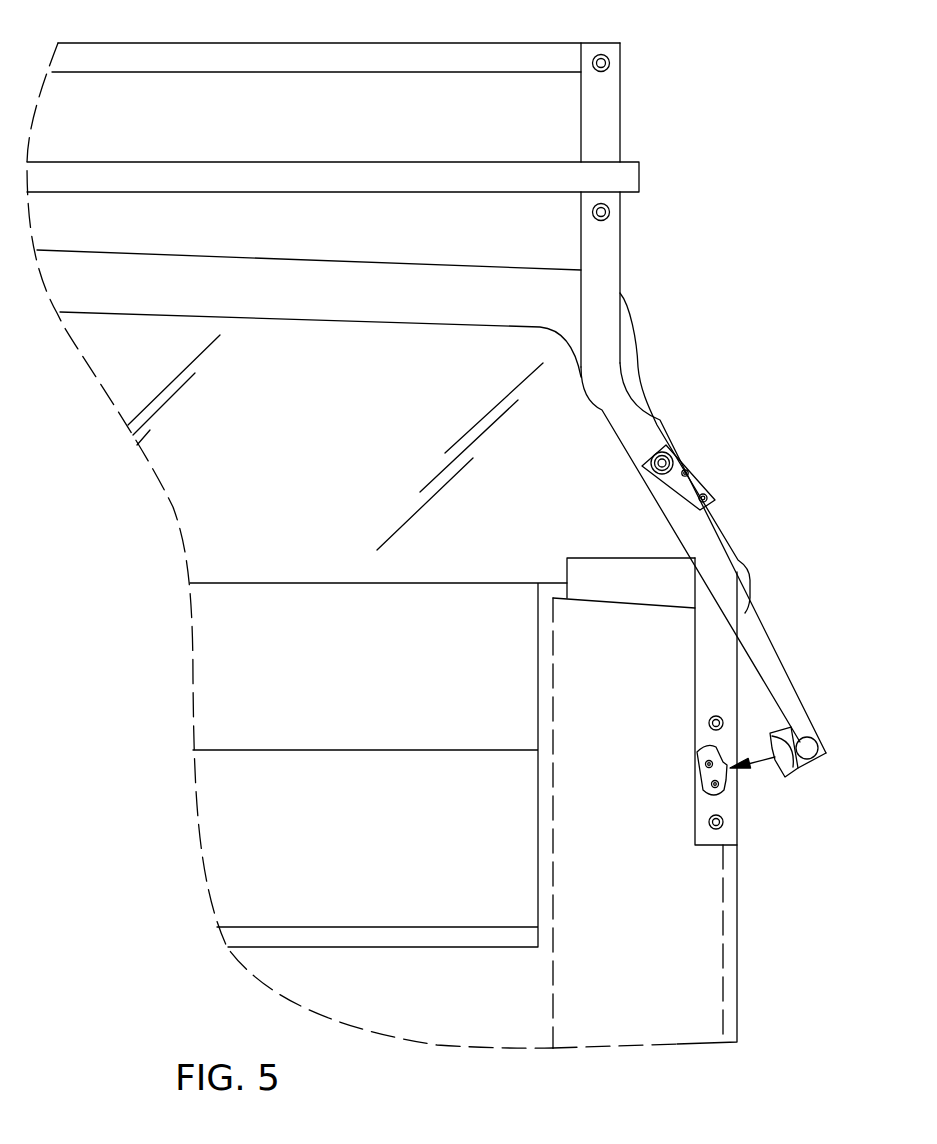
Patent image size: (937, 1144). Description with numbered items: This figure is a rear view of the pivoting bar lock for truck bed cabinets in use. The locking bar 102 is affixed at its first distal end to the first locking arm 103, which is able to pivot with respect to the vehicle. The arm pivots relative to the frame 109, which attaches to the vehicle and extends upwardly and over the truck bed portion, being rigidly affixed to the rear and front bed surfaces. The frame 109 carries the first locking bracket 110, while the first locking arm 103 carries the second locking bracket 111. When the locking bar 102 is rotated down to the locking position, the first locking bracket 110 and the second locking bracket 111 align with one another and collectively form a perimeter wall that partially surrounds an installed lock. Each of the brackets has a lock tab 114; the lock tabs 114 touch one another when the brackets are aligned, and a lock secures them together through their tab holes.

The locking bar 102 is at (790, 715).
The first locking arm 103 is at (750, 620).
The frame 109 is at (703, 703).
The first locking bracket 110 is at (700, 762).
The second locking bracket 111 is at (790, 768).
The lock tab 114 is at (775, 762).